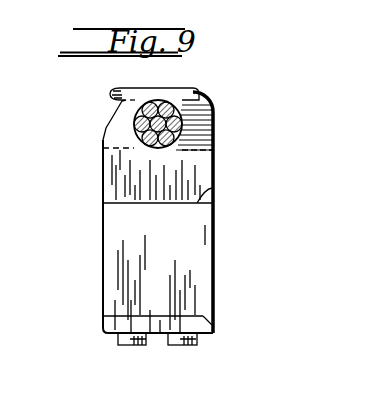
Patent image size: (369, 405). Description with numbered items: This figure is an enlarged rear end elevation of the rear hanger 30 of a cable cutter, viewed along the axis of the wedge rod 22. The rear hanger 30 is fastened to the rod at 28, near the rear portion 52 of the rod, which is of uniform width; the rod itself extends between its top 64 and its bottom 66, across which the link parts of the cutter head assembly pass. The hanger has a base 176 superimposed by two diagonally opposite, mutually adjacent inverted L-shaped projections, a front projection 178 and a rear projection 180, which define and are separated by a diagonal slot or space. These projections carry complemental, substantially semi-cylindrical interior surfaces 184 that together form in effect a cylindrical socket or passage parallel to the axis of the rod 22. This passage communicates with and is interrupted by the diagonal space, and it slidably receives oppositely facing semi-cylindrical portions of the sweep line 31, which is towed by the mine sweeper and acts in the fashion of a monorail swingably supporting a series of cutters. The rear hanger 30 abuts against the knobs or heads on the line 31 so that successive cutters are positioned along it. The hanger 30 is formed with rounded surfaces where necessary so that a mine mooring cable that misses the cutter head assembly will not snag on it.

The wedge rod 22 is at (102, 268).
The fastening of rear hanger 28 is at (177, 347).
The rear hanger 30 is at (102, 185).
The sweep line 31 is at (183, 122).
The rear portion 52 is at (205, 235).
The top of the rod 64 is at (212, 188).
The bottom of the rod 66 is at (214, 326).
The base 176 is at (207, 170).
The front inverted L-shaped projection 178 is at (201, 94).
The rear inverted L-shaped projection 180 is at (109, 133).
The semi-cylindrical interior surfaces 184 is at (158, 100).